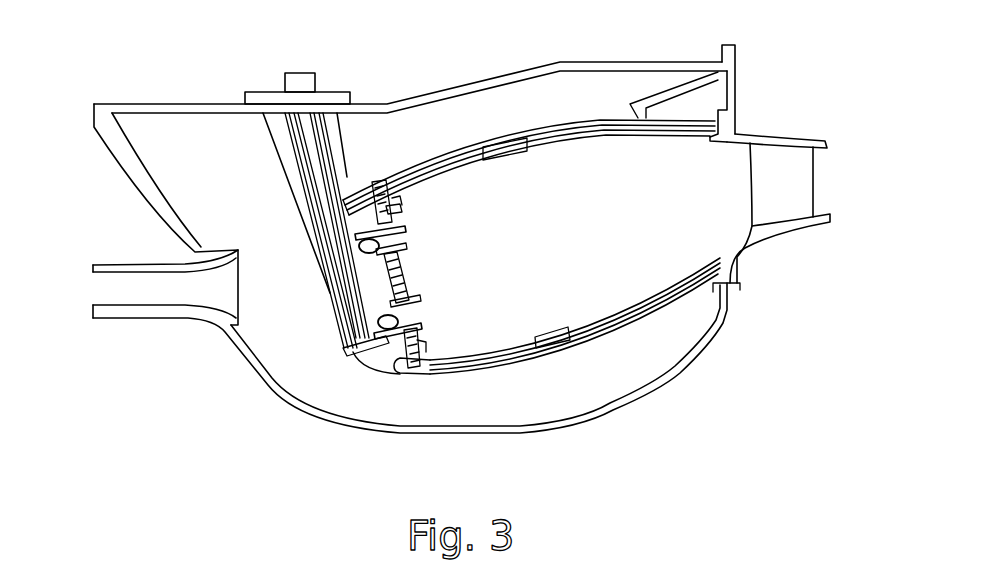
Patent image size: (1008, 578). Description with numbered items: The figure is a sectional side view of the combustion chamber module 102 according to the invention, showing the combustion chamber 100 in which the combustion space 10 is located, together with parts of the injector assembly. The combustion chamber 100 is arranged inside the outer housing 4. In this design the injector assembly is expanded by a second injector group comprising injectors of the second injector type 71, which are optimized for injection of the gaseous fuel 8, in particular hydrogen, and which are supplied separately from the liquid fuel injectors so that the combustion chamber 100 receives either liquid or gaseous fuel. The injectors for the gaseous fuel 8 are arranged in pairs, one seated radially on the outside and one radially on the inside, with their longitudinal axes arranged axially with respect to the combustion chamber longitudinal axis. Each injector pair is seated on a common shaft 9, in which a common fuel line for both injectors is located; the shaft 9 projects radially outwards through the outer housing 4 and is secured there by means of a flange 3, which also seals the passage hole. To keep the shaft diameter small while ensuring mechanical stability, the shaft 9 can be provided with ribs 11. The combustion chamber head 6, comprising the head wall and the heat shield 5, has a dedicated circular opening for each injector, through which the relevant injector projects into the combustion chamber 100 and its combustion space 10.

The flange 3 is at (270, 84).
The outer housing 4 is at (462, 100).
The heat shield 5 is at (403, 209).
The combustion chamber head 6 is at (397, 173).
The gaseous fuel 8 is at (391, 239).
The common shaft 9 is at (315, 263).
The combustion space 10 is at (483, 338).
The rib 11 is at (295, 162).
The second injector type 71 is at (402, 230).
The combustion chamber 100 is at (538, 372).
The combustion chamber module 102 is at (406, 436).